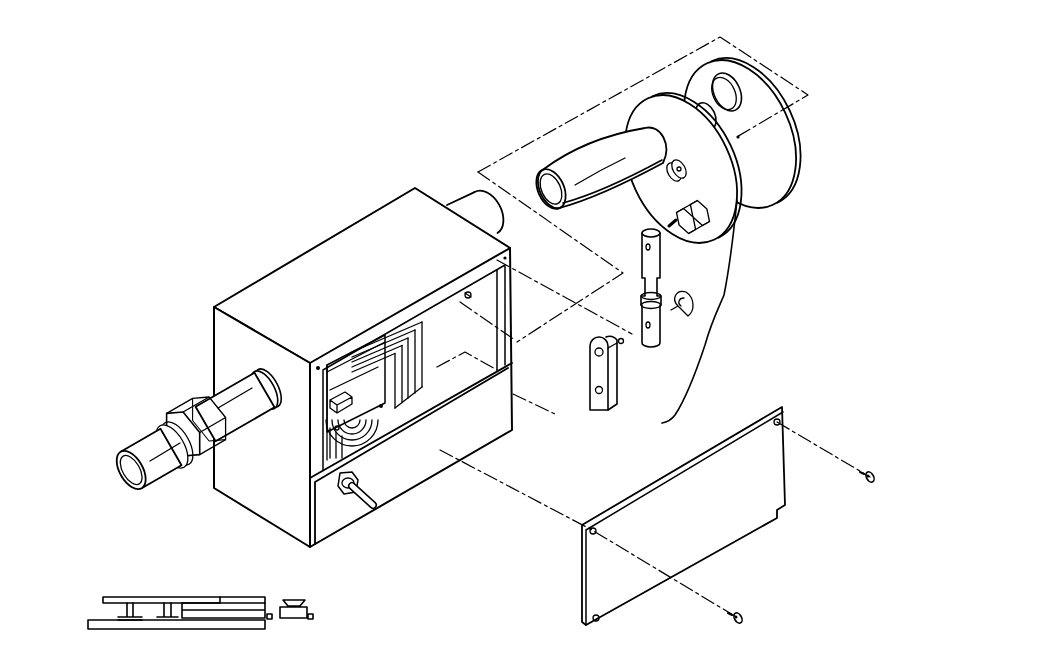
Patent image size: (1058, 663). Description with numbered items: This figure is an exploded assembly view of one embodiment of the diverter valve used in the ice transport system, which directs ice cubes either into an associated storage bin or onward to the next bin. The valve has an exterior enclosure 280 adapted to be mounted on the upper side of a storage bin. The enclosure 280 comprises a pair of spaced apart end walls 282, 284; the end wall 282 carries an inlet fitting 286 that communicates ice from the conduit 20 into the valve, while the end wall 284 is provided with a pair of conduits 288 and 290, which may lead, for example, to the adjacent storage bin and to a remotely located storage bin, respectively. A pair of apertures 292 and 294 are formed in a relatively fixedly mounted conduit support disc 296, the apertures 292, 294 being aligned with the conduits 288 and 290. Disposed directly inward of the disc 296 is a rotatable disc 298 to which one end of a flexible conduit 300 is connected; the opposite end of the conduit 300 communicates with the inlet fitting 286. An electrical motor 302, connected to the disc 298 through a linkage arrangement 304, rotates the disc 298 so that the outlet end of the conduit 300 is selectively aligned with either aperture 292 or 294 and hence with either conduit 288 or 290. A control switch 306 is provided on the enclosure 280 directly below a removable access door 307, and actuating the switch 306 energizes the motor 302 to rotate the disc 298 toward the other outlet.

The conduit 20 is at (143, 437).
The exterior enclosure 280 is at (345, 358).
The end wall 282 is at (263, 505).
The end wall 284 is at (480, 352).
The inlet fitting 286 is at (240, 400).
The conduit 288 is at (473, 197).
The conduit 290 is at (613, 210).
The aperture 292 is at (727, 85).
The aperture 294 is at (717, 123).
The conduit support disc 296 is at (787, 203).
The rotatable disc 298 is at (653, 92).
The flexible conduit 300 is at (590, 157).
The electrical motor 302 is at (386, 438).
The linkage arrangement 304 is at (727, 302).
The control switch 306 is at (364, 508).
The removable access door 307 is at (722, 533).